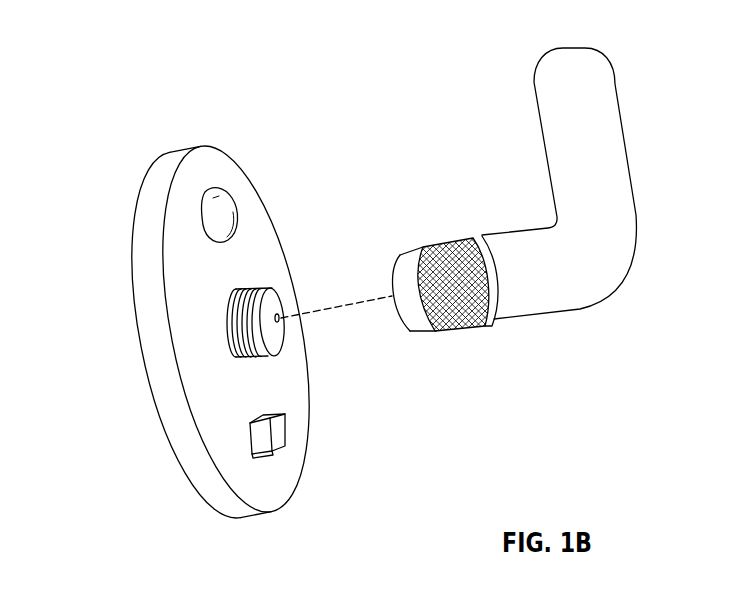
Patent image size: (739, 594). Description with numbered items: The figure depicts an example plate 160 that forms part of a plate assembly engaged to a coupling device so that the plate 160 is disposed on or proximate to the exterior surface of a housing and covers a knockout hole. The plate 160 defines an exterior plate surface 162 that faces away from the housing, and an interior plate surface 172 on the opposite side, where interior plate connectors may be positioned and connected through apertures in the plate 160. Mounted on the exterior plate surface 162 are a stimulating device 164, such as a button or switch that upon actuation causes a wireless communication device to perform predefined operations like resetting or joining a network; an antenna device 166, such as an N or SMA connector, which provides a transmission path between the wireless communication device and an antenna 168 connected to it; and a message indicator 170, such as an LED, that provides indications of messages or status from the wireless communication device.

The plate 160 is at (236, 332).
The exterior plate surface 162 is at (260, 243).
The stimulating device 164 is at (281, 433).
The antenna device 166 is at (277, 336).
The antenna 168 is at (615, 152).
The message indicator 170 is at (230, 207).
The interior plate surface 172 is at (110, 333).